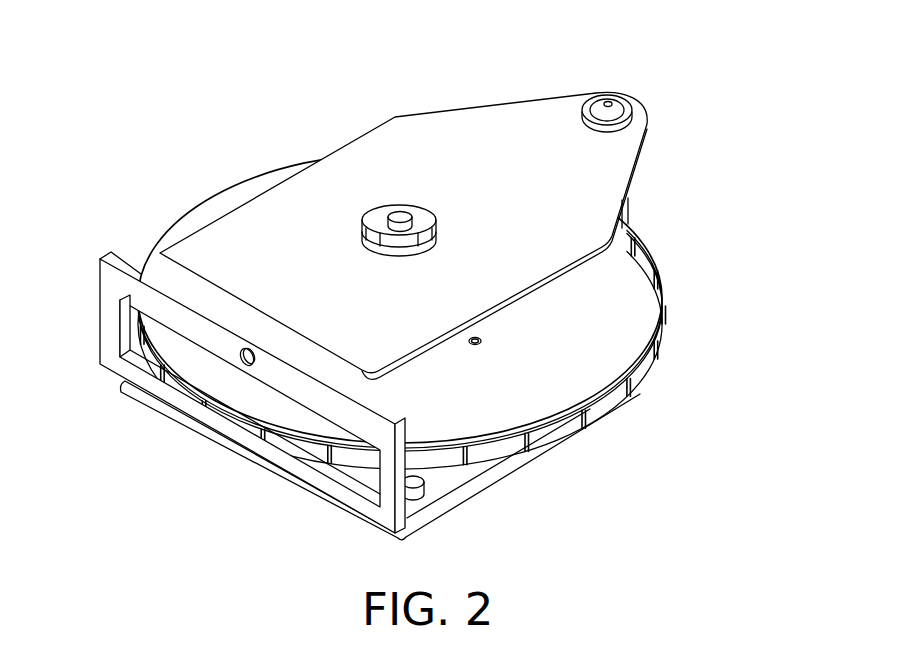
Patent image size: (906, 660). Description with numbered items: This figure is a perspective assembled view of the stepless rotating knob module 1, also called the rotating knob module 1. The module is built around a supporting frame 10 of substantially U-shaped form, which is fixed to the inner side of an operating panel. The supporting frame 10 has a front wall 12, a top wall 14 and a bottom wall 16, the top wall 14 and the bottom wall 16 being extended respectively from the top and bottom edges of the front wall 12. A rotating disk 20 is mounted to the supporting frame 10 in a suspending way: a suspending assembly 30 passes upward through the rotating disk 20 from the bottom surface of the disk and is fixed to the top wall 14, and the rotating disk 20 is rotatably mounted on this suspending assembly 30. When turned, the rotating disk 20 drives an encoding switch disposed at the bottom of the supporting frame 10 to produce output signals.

The stepless rotating knob module 1 is at (188, 59).
The supporting frame 10 is at (458, 215).
The front wall 12 is at (322, 484).
The top wall 14 is at (452, 156).
The bottom wall 16 is at (432, 484).
The rotating disk 20 is at (666, 282).
The suspending assembly 30 is at (388, 196).